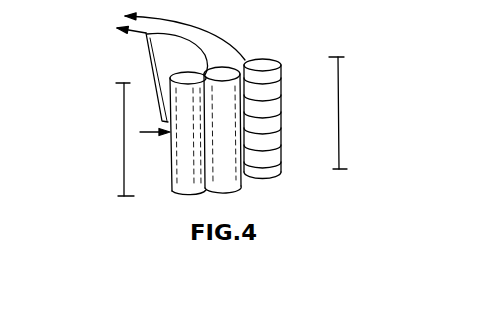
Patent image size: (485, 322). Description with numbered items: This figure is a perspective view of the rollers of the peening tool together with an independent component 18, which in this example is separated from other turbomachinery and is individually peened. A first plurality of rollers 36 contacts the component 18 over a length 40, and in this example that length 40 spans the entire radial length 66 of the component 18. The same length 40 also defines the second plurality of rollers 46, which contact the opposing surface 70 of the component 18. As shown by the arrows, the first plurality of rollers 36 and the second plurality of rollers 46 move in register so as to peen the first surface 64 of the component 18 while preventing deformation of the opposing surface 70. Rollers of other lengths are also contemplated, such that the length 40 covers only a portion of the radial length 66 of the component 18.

The component 18 is at (222, 58).
The first surface 64 is at (153, 68).
The first plurality of rollers 36 is at (171, 163).
The opposing surface 70 is at (251, 50).
The second plurality of rollers 46 is at (318, 112).
The length 40 is at (124, 109).
The radial length 66 is at (339, 95).